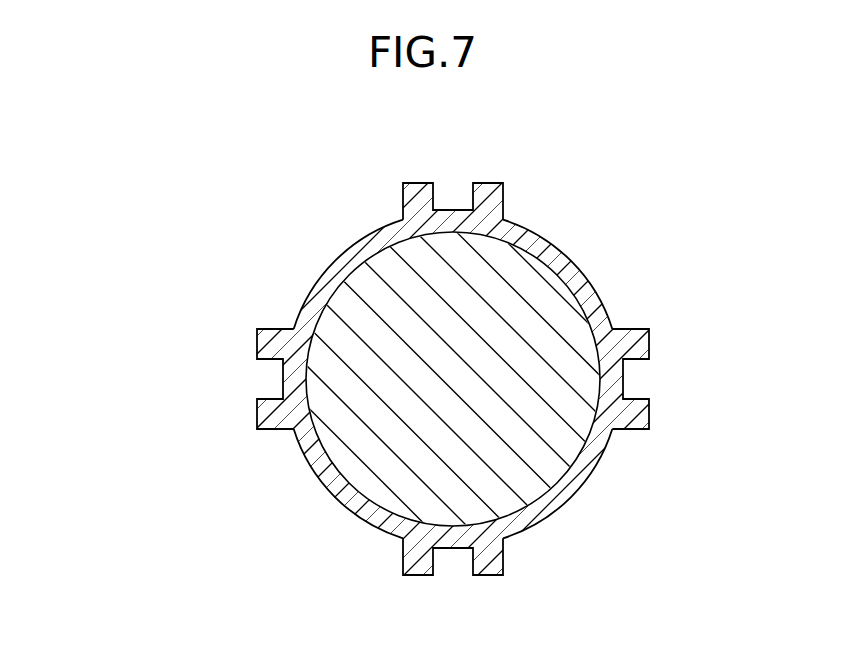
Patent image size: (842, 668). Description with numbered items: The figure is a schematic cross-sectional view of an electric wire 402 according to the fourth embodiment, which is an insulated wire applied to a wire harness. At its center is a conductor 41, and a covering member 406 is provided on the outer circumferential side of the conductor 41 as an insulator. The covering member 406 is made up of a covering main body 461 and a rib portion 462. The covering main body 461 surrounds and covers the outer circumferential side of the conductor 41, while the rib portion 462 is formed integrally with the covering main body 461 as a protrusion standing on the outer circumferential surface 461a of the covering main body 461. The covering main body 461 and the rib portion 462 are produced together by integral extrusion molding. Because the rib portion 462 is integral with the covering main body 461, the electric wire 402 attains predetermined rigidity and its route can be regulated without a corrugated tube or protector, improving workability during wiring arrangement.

The electric wire 402 is at (121, 448).
The conductor 41 is at (347, 343).
The covering member 406 is at (172, 383).
The covering main body 461 is at (297, 437).
The outer circumferential surface 461a is at (540, 237).
The rib portion 462 is at (418, 183).